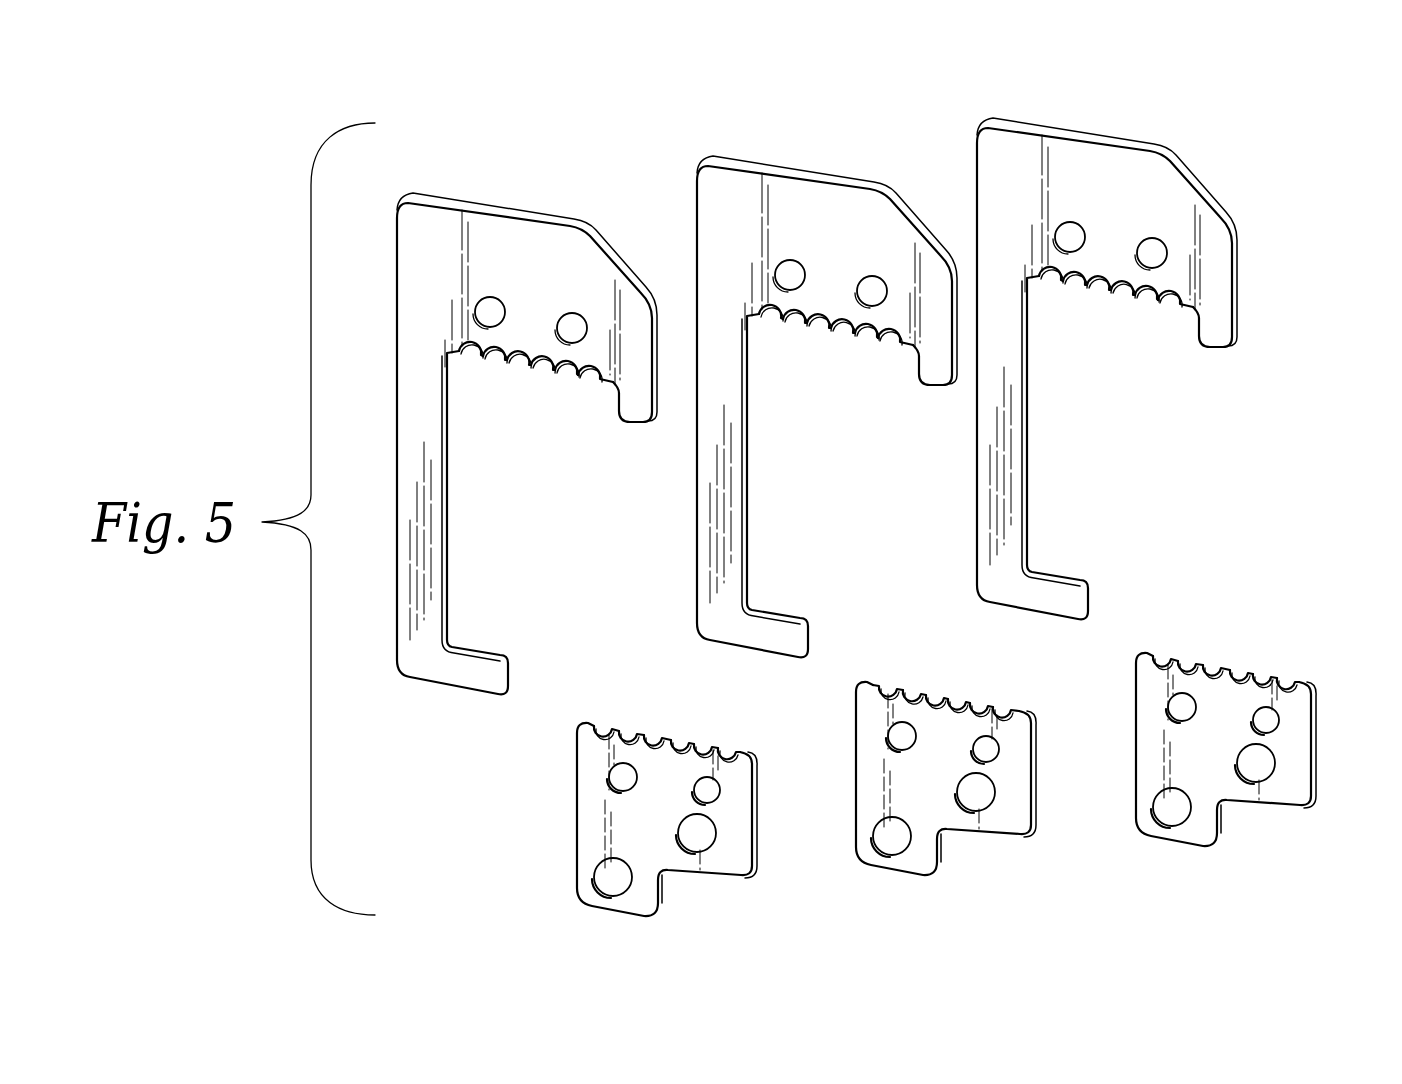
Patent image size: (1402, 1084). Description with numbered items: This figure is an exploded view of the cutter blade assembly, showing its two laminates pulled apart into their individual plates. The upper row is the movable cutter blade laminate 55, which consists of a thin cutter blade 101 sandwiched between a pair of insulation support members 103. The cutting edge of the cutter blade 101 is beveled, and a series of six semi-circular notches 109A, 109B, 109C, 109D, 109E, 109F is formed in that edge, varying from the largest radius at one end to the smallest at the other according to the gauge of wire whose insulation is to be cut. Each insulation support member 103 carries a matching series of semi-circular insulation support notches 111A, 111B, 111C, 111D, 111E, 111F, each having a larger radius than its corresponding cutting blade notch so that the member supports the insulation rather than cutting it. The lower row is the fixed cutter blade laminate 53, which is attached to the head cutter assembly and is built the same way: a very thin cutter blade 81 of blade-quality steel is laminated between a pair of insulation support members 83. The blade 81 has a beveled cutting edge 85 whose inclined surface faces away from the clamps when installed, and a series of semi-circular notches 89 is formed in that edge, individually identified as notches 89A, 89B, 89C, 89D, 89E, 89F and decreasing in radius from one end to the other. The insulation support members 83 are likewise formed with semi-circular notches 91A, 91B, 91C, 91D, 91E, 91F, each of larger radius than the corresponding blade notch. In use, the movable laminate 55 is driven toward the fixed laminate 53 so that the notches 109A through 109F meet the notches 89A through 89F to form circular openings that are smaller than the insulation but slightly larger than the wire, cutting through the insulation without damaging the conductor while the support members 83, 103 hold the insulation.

The movable cutter blade laminate 55 is at (1285, 257).
The insulation support members 103 is at (578, 203).
The cutter blade 101 is at (869, 168).
The semi-circular insulation support notch 111A is at (470, 356).
The semi-circular insulation support notch 111B is at (494, 360).
The semi-circular insulation support notch 111C is at (518, 364).
The semi-circular insulation support notch 111D is at (542, 369).
The semi-circular insulation support notch 111E is at (566, 374).
The semi-circular insulation support notch 111F is at (589, 378).
The semi-circular notch 109A is at (775, 362).
The semi-circular notch 109B is at (781, 383).
The semi-circular notch 109C is at (791, 403).
The semi-circular notch 109D is at (803, 423).
The semi-circular notch 109E is at (815, 443).
The semi-circular notch 109F is at (832, 462).
The fixed cutter blade laminate 53 is at (535, 838).
The insulation support members 83 is at (728, 870).
The cutter blade 81 is at (1007, 828).
The beveled cutting edge 85 is at (947, 642).
The semi-circular notches 89 is at (1027, 664).
The semi-circular notch 89A is at (883, 662).
The semi-circular notch 89B is at (910, 649).
The semi-circular notch 89C is at (944, 666).
The semi-circular notch 89D is at (971, 658).
The semi-circular notch 89E is at (994, 680).
The semi-circular notch 89F is at (1029, 687).
The semi-circular notch 91A is at (604, 720).
The semi-circular notch 91B is at (629, 724).
The semi-circular notch 91C is at (655, 729).
The semi-circular notch 91D is at (682, 734).
The semi-circular notch 91E is at (706, 738).
The semi-circular notch 91F is at (730, 743).